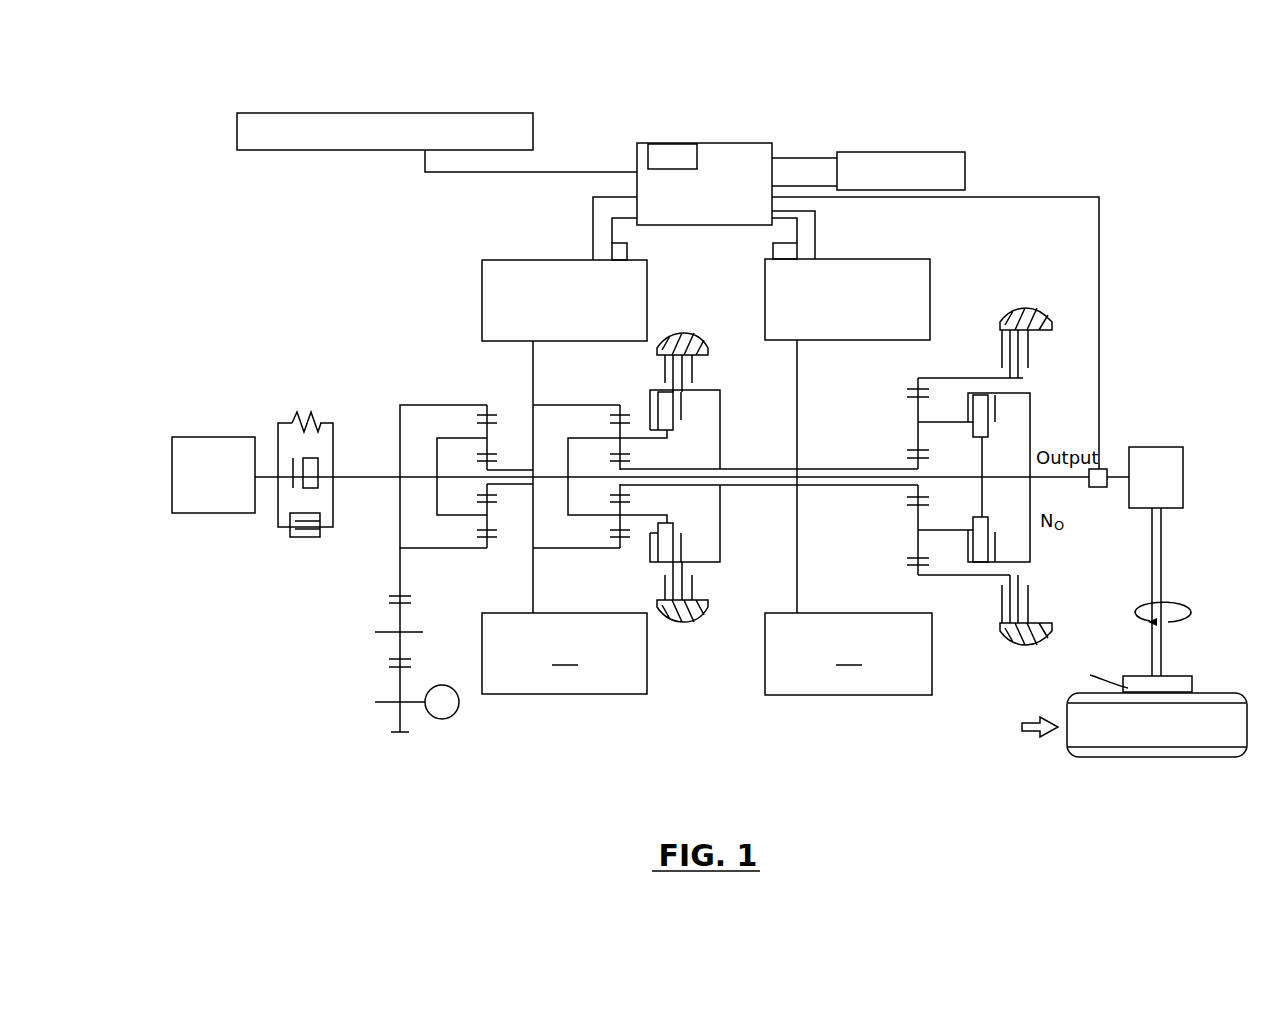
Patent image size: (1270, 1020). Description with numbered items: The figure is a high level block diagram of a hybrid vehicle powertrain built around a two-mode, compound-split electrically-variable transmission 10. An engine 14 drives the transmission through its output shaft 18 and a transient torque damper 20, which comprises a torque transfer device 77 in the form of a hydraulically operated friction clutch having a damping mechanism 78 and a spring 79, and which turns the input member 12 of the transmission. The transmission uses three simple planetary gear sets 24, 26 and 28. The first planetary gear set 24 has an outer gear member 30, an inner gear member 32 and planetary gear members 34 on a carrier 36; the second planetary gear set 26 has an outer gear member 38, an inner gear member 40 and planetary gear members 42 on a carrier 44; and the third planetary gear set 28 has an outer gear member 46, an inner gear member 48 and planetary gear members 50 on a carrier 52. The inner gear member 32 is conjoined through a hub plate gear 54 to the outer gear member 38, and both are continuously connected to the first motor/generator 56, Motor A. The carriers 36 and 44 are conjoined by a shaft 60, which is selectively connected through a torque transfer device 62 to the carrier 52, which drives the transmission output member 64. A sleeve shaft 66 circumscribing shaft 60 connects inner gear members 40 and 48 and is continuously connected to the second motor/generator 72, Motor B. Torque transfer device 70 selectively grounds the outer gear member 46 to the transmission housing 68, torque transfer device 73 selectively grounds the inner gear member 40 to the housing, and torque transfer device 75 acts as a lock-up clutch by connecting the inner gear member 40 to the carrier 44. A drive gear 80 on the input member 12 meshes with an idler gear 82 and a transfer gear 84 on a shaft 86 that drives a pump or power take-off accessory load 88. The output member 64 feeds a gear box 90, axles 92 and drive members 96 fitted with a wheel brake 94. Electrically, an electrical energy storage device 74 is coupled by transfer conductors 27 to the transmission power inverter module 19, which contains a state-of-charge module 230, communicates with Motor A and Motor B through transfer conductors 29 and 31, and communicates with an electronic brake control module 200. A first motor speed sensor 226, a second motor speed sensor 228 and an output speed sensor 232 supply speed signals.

The electrically-variable transmission 10 is at (219, 78).
The input member 12 is at (388, 475).
The engine 14 is at (220, 437).
The output shaft 18 is at (273, 475).
The transmission power inverter module 19 is at (637, 160).
The transient torque damper 20 is at (298, 366).
The first planetary gear set 24 is at (481, 404).
The second planetary gear set 26 is at (615, 404).
The transfer conductors 27 is at (805, 157).
The third planetary gear set 28 is at (913, 382).
The transfer conductors 29 is at (593, 230).
The outer gear member 30 is at (491, 418).
The transfer conductors 31 is at (817, 224).
The inner gear member 32 is at (495, 468).
The planetary gear members 34 is at (483, 432).
The carrier 36 is at (437, 497).
The outer gear member 38 is at (625, 412).
The inner gear member 40 is at (627, 463).
The planetary gear members 42 is at (620, 430).
The carrier 44 is at (570, 500).
The outer gear member 46 is at (912, 385).
The inner gear member 48 is at (912, 455).
The planetary gear members 50 is at (912, 405).
The carrier 52 is at (1032, 400).
The hub plate gear 54 is at (533, 452).
The first motor/generator 56 is at (482, 290).
The shaft 60 is at (773, 477).
The torque transfer device 62 is at (1003, 423).
The transmission output member 64 is at (1120, 470).
The sleeve shaft 66 is at (742, 468).
The transmission housing 68 is at (680, 332).
The torque transfer device 70 is at (994, 350).
The second motor/generator 72 is at (930, 278).
The torque transfer device 73 is at (697, 372).
The electrical energy storage device 74 is at (966, 165).
The torque transfer device 75 is at (683, 421).
The torque transfer device 77 is at (282, 530).
The damping mechanism 78 is at (314, 458).
The spring 79 is at (297, 412).
The drive gear 80 is at (398, 518).
The idler gear 82 is at (395, 627).
The transfer gear 84 is at (398, 715).
The shaft 86 is at (414, 705).
The hydraulic/transmission fluid pump and/or power take-off unit 88 is at (453, 715).
The gear box 90 is at (1127, 497).
The axles 92 is at (1163, 575).
The wheel brake 94 is at (1192, 680).
The drive members 96 is at (1092, 750).
The electronic brake control module 200 is at (378, 113).
The first motor speed sensor 226 is at (628, 254).
The second motor speed sensor 228 is at (773, 254).
The state-of-charge module 230 is at (682, 143).
The output speed sensor 232 is at (1100, 468).